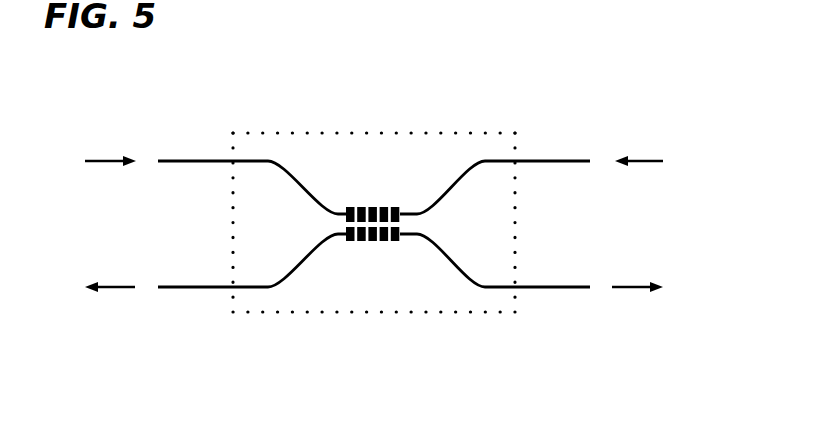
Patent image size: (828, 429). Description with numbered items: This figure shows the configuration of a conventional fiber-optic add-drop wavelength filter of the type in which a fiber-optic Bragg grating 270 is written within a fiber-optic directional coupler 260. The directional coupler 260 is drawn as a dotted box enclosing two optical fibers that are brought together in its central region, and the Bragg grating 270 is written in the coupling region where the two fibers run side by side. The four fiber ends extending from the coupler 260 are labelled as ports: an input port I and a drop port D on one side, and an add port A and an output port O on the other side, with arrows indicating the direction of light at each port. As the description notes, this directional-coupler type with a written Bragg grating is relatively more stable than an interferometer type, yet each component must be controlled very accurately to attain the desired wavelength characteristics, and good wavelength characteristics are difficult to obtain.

The fiber-optic directional coupler 260 is at (465, 130).
The fiber-optic Bragg grating 270 is at (373, 207).
The input port I is at (97, 160).
The drop port D is at (91, 287).
The add port A is at (656, 160).
The output port O is at (655, 287).